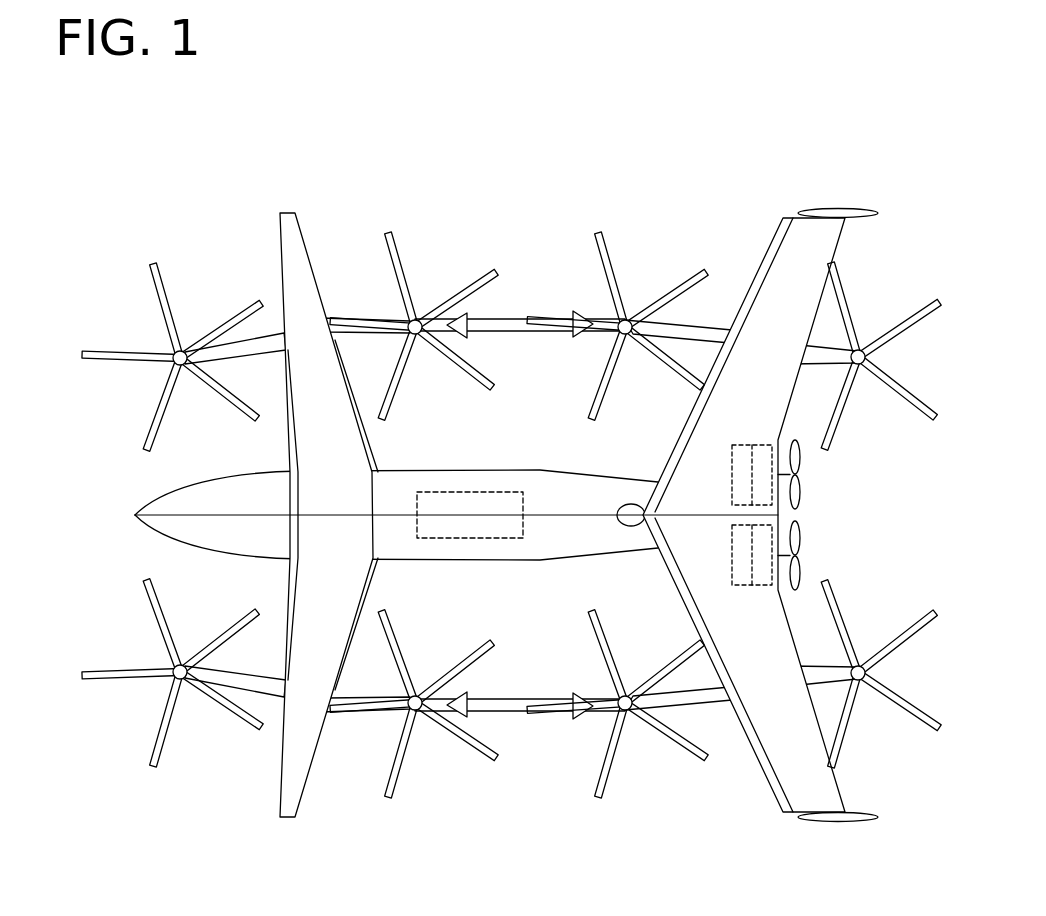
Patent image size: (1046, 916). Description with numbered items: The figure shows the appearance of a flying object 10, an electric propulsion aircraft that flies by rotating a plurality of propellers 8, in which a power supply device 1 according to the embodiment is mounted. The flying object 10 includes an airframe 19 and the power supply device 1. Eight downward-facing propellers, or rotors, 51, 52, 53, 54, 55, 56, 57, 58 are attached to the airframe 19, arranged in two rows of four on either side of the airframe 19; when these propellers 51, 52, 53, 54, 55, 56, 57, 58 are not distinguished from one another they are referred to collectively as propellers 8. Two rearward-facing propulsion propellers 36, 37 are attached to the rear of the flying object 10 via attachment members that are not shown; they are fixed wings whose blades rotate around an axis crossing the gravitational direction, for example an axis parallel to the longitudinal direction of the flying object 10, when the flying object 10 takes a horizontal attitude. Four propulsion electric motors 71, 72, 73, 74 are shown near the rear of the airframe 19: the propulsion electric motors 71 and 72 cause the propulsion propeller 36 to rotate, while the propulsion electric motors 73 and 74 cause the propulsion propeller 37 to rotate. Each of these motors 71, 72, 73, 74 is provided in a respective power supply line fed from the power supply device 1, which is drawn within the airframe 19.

The power supply device 1 is at (490, 490).
The propellers 8 is at (85, 338).
The flying object 10 is at (725, 197).
The airframe 19 is at (152, 500).
The propulsion propeller 36 is at (803, 572).
The propulsion propeller 37 is at (803, 460).
The propeller 51 is at (170, 742).
The propeller 52 is at (168, 290).
The propeller 53 is at (405, 775).
The propeller 54 is at (403, 262).
The propeller 55 is at (612, 772).
The propeller 56 is at (608, 262).
The propeller 57 is at (912, 723).
The propeller 58 is at (908, 300).
The propulsion electric motor 71 is at (762, 585).
The propulsion electric motor 72 is at (732, 553).
The propulsion electric motor 73 is at (762, 445).
The propulsion electric motor 74 is at (732, 478).